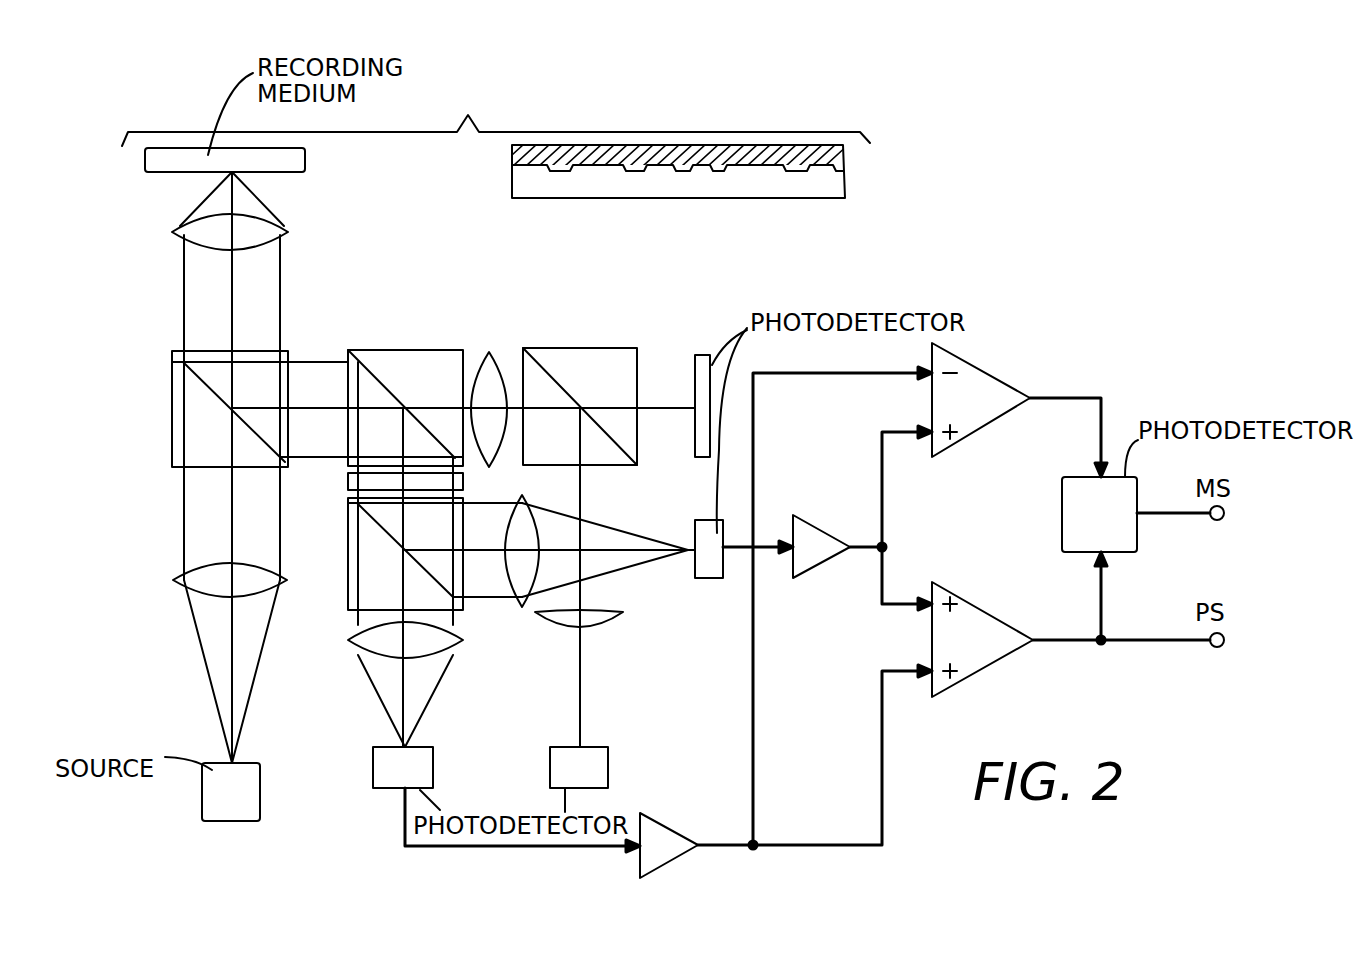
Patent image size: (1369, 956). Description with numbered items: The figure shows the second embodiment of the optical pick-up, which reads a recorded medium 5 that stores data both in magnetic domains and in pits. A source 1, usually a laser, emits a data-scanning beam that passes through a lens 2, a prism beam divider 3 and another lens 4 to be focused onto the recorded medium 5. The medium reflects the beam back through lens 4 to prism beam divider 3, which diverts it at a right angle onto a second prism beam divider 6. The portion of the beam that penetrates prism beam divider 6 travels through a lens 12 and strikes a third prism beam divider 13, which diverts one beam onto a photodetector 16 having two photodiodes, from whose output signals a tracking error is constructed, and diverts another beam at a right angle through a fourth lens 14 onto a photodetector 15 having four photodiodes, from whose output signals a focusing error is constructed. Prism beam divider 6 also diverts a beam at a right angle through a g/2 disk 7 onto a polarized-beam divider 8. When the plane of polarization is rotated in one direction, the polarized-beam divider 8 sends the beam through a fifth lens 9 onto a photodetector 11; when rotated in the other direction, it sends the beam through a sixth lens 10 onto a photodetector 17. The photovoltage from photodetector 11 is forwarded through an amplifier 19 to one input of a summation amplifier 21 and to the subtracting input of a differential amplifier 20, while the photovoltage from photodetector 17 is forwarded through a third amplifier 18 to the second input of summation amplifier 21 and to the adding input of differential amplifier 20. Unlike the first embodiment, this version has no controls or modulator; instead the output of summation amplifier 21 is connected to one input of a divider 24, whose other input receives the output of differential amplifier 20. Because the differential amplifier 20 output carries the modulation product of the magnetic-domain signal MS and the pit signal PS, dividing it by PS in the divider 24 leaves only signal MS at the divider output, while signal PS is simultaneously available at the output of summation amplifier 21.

The source 1 is at (202, 808).
The lens 2 is at (176, 582).
The prism beam divider 3 is at (172, 414).
The lens 4 is at (172, 232).
The recorded medium 5 is at (510, 165).
The prism beam divider 6 is at (405, 360).
The g/2 disk 7 is at (348, 482).
The polarized-beam divider 8 is at (355, 553).
The fifth lens 9 is at (455, 646).
The sixth lens 10 is at (522, 607).
The photodetector 11 is at (373, 766).
The lens 12 is at (489, 350).
The prism beam divider 13 is at (585, 358).
The fourth lens 14 is at (598, 620).
The photodetector 15 is at (595, 766).
The photodetector 16 is at (700, 353).
The photodetector 17 is at (712, 578).
The third amplifier 18 is at (812, 562).
The amplifier 19 is at (655, 833).
The differential amplifier 20 is at (982, 395).
The summation amplifier 21 is at (975, 622).
The divider 24 is at (1068, 497).